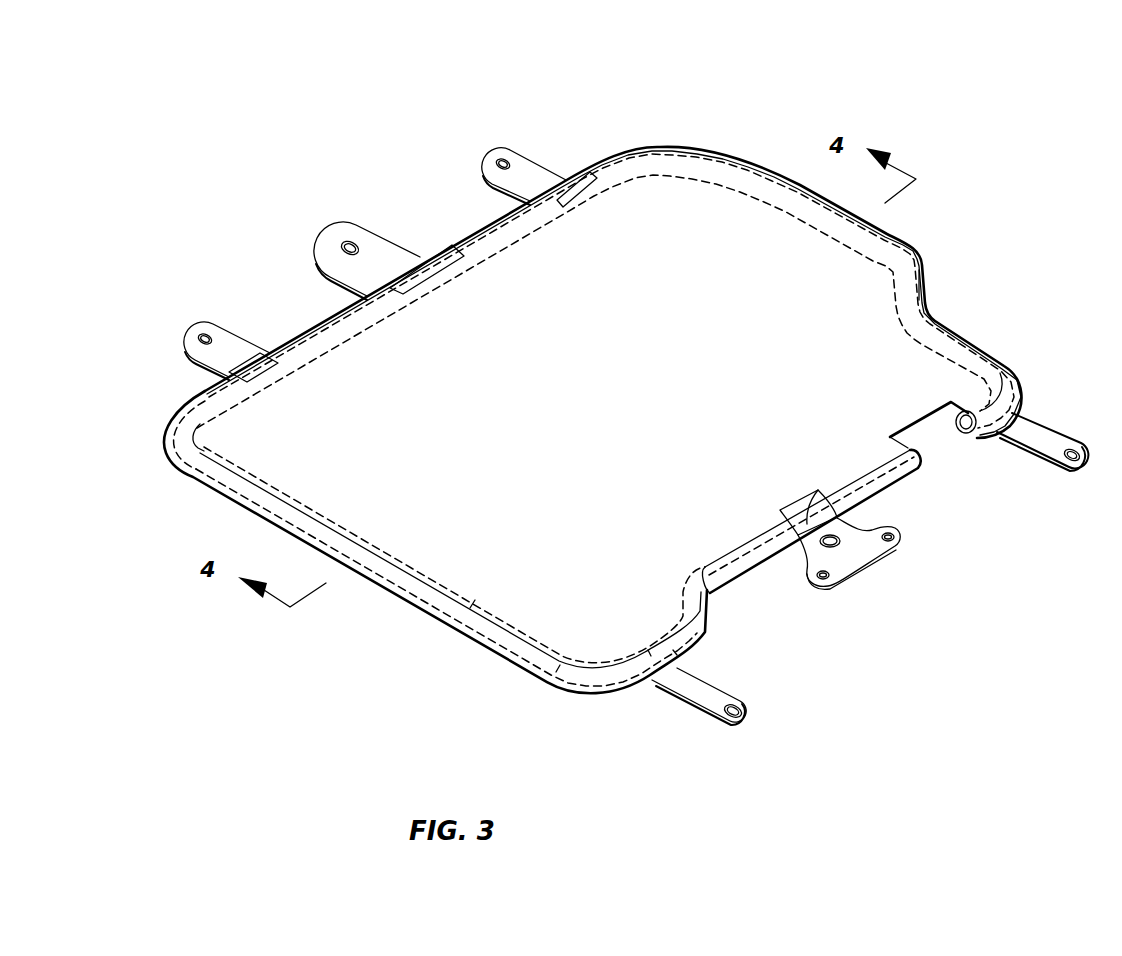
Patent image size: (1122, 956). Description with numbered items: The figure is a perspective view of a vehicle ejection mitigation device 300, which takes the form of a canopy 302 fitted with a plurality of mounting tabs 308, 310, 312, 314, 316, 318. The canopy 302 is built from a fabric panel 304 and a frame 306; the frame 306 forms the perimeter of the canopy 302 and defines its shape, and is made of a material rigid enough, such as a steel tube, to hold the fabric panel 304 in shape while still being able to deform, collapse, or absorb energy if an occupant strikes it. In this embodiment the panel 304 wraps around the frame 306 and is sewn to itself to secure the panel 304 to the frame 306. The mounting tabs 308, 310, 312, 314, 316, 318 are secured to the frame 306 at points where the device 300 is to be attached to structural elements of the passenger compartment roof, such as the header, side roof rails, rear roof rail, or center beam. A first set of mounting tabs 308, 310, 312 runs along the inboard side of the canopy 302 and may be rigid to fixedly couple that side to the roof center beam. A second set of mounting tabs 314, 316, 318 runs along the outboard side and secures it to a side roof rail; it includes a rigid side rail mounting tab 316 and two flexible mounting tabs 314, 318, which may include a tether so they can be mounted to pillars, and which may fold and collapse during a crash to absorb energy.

The vehicle ejection mitigation device 300 is at (976, 97).
The canopy 302 is at (659, 120).
The fabric panel 304 is at (450, 537).
The frame 306 is at (473, 628).
The mounting tab 308 is at (494, 150).
The mounting tab 310 is at (322, 229).
The mounting tab 312 is at (186, 325).
The flexible mounting tab 314 is at (707, 697).
The rigid side rail mounting tab 316 is at (855, 553).
The flexible mounting tab 318 is at (1040, 450).